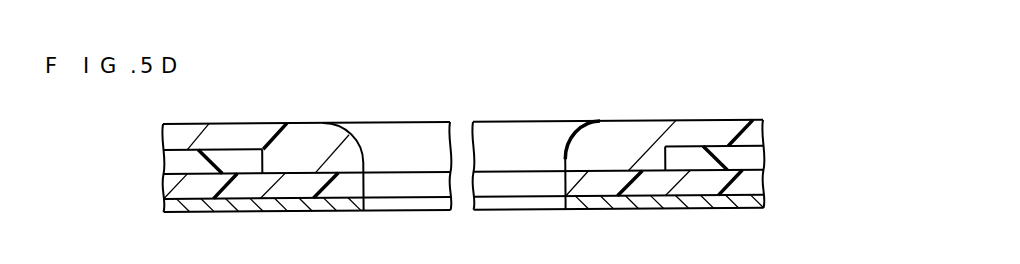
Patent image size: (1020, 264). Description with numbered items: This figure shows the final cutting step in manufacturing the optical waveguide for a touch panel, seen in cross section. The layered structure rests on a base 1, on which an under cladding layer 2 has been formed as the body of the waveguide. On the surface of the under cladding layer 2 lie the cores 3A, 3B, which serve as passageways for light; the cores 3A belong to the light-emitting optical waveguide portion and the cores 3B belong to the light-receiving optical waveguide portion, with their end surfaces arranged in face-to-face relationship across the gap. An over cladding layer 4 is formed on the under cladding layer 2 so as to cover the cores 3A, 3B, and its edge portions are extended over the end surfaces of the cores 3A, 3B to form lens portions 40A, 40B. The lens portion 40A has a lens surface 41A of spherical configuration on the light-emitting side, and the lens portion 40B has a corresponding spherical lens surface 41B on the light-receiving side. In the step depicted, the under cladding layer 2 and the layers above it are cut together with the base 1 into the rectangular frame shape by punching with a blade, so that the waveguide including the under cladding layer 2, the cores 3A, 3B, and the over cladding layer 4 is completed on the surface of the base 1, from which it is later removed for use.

The base 1 is at (170, 207).
The under cladding layer 2 is at (165, 186).
The light-emitting cores 3A is at (170, 162).
The light-receiving cores 3B is at (755, 157).
The over cladding layer 4 is at (170, 136).
The light-emitting lens portion 40A is at (334, 141).
The light-emitting lens surface 41A is at (361, 148).
The light-receiving lens portion 40B is at (588, 151).
The light-receiving lens surface 41B is at (568, 148).